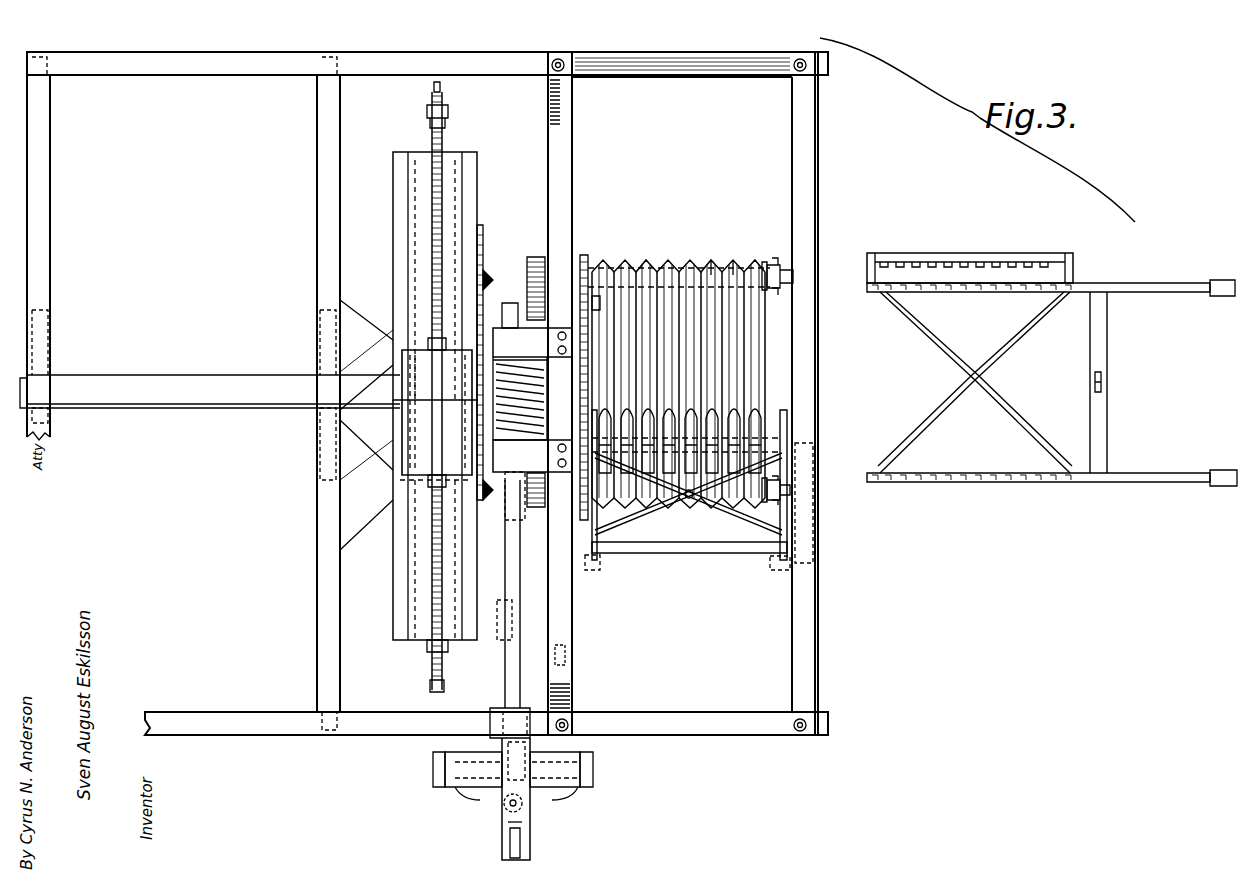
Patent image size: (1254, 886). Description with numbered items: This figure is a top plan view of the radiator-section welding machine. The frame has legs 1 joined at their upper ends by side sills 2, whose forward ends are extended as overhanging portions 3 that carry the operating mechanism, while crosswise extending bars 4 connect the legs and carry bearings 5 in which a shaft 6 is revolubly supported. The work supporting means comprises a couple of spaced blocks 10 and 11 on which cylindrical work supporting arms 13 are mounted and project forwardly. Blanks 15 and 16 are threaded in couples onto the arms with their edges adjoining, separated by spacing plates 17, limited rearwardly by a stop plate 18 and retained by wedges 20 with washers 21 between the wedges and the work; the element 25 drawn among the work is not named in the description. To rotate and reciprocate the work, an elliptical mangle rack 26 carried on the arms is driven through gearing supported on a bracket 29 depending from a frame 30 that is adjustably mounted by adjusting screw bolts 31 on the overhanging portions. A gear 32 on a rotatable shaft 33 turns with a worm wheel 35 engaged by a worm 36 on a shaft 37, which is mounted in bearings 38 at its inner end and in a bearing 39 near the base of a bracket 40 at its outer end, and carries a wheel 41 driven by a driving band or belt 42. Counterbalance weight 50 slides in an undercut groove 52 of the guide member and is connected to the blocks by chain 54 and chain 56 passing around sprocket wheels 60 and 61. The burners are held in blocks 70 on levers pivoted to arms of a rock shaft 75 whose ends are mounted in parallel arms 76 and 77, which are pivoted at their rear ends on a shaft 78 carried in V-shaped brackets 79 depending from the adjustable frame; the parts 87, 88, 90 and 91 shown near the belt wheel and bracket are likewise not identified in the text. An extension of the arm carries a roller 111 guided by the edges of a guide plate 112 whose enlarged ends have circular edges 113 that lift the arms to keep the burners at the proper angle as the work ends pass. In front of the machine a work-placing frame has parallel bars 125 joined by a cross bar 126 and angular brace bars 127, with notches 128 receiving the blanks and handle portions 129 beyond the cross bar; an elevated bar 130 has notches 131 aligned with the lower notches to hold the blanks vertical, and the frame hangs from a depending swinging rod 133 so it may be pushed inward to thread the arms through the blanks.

The legs 1 is at (30, 62).
The side sills 2 is at (195, 55).
The overhanging portions 3 is at (516, 58).
The crosswise extending bars 4 is at (52, 240).
The bearings 5 is at (45, 355).
The shaft 6 is at (172, 410).
The block 10 is at (498, 630).
The block 11 is at (480, 225).
The work supporting arms 13 is at (486, 262).
The blank 15 is at (711, 260).
The blank 16 is at (690, 258).
The spacing plates 17 is at (733, 260).
The stop plate 18 is at (592, 266).
The wedges 20 is at (778, 262).
The washers 21 is at (766, 260).
The cartridges 25 is at (757, 405).
The mangle rack 26 is at (536, 255).
The bracket 29 is at (558, 326).
The frame 30 is at (766, 76).
The adjusting screw bolts 31 is at (560, 58).
The gear 32 is at (500, 450).
The rotatable shaft 33 is at (500, 425).
The worm wheel 35 is at (495, 330).
The worm 36 is at (500, 395).
The shaft 37 is at (504, 688).
The bearings 38 is at (495, 340).
The bearing 39 is at (502, 724).
The bracket 40 is at (506, 818).
The wheel 41 is at (448, 790).
The driving band or belt 42 is at (592, 790).
The counterbalance weight 50 is at (395, 425).
The undercut groove 52 is at (432, 540).
The chain 54 is at (432, 192).
The chain or cord 56 is at (432, 600).
The sprocket wheels 60 is at (437, 80).
The sprocket wheels 61 is at (430, 686).
The blocks 70 is at (770, 440).
The rock shaft 75 is at (760, 462).
The parallel arm 76 is at (775, 570).
The parallel arm 77 is at (600, 572).
The shaft 78 is at (686, 553).
The brackets 79 is at (594, 562).
The pin 87 is at (521, 852).
The slot 88 is at (508, 845).
The pivot 90 is at (506, 800).
The link 91 is at (448, 788).
The roller 111 is at (548, 480).
The guide plate 112 is at (598, 298).
The circular edges 113 is at (585, 253).
The parallel bars 125 is at (1082, 283).
The cross bar 126 is at (1108, 328).
The angular brace bars 127 is at (1000, 418).
The notches 128 is at (1010, 292).
The handle portions 129 is at (1220, 280).
The bar 130 is at (1040, 252).
The notches 131 is at (1000, 266).
The depending swinging rod 133 is at (1102, 380).